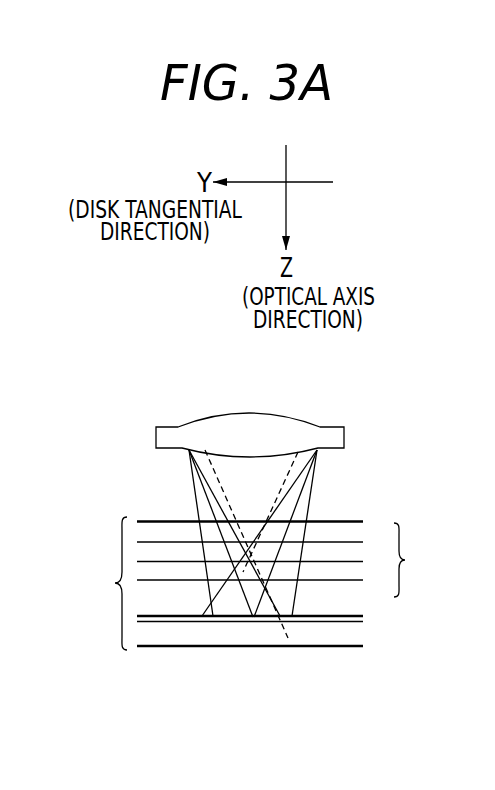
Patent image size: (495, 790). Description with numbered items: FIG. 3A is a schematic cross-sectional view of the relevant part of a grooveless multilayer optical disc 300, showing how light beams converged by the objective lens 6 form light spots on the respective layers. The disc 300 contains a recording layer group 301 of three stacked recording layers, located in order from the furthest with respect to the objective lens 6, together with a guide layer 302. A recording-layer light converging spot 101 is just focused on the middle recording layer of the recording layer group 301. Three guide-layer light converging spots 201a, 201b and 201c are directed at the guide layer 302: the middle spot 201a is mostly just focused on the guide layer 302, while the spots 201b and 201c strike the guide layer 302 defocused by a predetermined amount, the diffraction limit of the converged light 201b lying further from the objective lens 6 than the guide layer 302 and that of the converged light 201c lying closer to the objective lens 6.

The objective lens 6 is at (311, 426).
The recording-layer light converging spot 101 is at (245, 553).
The guide-layer light converging spot 201a is at (253, 615).
The guide-layer light converging spot 201b is at (293, 602).
The guide-layer light converging spot 201c is at (212, 603).
The multilayer optical disc 300 is at (110, 597).
The recording layer group 301 is at (448, 574).
The guide layer 302 is at (363, 618).